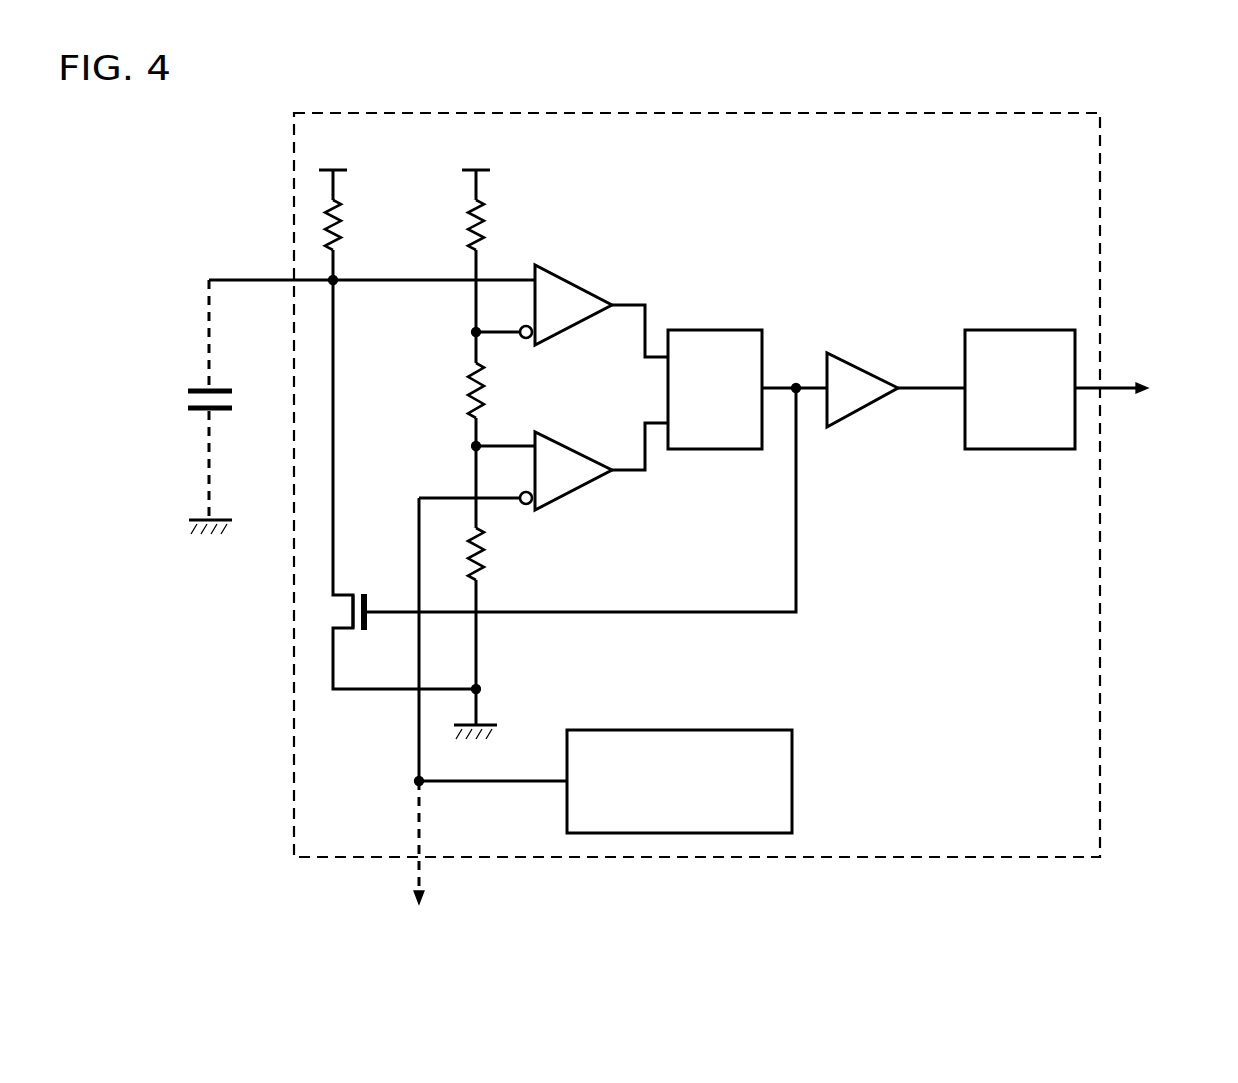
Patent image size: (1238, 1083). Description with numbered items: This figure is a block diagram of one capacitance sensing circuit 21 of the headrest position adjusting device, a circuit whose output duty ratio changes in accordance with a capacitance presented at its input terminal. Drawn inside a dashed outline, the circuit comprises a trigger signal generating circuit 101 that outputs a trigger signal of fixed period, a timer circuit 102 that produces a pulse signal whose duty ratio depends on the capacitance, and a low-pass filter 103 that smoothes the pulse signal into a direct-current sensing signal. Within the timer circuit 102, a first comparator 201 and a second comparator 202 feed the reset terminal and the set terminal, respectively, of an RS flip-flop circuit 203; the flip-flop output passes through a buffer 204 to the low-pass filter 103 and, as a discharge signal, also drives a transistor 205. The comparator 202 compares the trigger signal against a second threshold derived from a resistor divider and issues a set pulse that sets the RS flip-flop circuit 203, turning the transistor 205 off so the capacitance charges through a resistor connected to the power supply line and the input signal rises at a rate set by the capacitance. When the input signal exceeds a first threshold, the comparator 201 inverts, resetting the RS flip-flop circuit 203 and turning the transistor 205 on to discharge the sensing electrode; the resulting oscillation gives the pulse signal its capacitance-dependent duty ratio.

The capacitance sensing circuit 21 is at (632, 112).
The trigger signal generating circuit 101 is at (794, 784).
The timer circuit 102 is at (773, 218).
The low-pass filter 103 is at (1018, 329).
The comparator 201 is at (575, 283).
The comparator 202 is at (578, 448).
The RS flip-flop circuit 203 is at (714, 328).
The buffer 204 is at (858, 362).
The transistor 205 is at (357, 592).